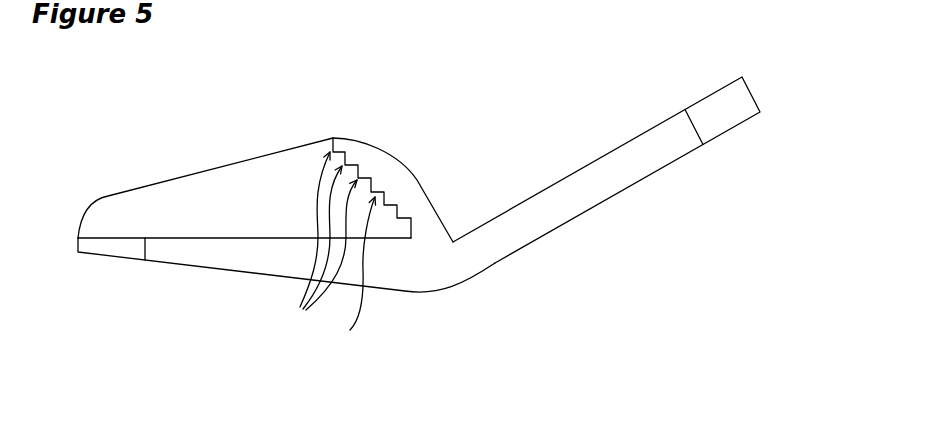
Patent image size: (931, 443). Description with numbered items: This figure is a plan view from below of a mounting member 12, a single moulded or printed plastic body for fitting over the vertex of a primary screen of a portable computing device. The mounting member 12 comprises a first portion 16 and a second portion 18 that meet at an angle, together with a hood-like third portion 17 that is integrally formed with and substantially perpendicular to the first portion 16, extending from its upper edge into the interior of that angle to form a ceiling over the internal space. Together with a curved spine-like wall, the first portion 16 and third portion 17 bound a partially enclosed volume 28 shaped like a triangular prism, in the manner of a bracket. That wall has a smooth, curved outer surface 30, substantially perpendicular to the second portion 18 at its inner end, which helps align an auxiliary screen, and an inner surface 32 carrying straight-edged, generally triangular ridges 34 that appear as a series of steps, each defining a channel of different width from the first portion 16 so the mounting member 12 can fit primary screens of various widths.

The mounting member 12 is at (439, 221).
The first portion 16 is at (213, 258).
The third portion 17 is at (210, 192).
The second portion 18 is at (575, 193).
The partially enclosed volume 28 is at (385, 228).
The outer surface 30 is at (418, 182).
The inner surface 32 is at (355, 281).
The ridges 34 is at (315, 247).